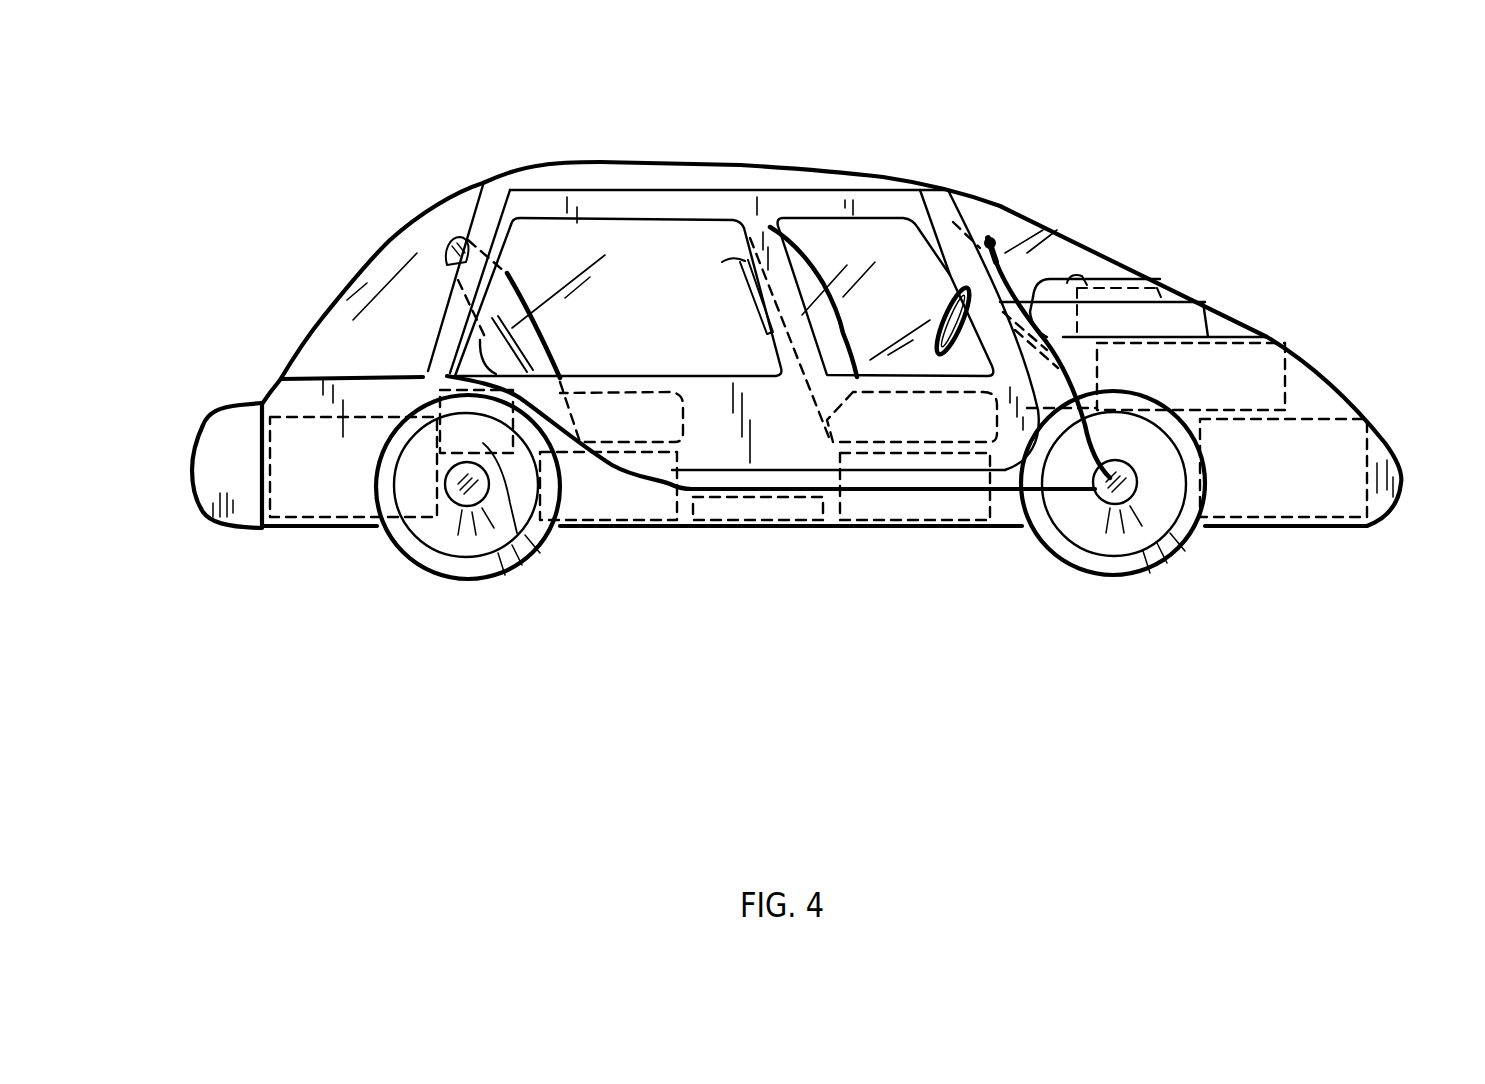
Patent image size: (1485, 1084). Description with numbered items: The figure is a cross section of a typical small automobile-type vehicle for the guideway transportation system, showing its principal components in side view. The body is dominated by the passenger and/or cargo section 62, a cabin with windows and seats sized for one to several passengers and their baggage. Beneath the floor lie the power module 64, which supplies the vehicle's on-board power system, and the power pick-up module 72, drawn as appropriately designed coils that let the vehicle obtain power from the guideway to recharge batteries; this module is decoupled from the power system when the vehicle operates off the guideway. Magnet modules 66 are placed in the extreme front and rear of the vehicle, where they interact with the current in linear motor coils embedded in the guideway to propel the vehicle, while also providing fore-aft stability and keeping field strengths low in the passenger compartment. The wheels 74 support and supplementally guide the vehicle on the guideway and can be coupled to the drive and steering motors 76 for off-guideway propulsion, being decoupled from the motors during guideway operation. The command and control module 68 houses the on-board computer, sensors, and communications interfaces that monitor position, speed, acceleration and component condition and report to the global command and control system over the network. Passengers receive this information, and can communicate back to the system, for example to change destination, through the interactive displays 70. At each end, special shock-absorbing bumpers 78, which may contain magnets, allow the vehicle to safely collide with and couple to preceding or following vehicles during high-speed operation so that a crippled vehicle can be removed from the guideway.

The passenger and/or cargo section 62 is at (326, 347).
The power module 64 is at (880, 513).
The magnet modules 66 is at (310, 517).
The command and control module 68 is at (1157, 293).
The interactive displays 70 is at (727, 283).
The power pick-up module 72 is at (783, 513).
The wheels 74 is at (420, 553).
The drive and steering motors 76 is at (517, 543).
The bumpers 78 is at (192, 485).